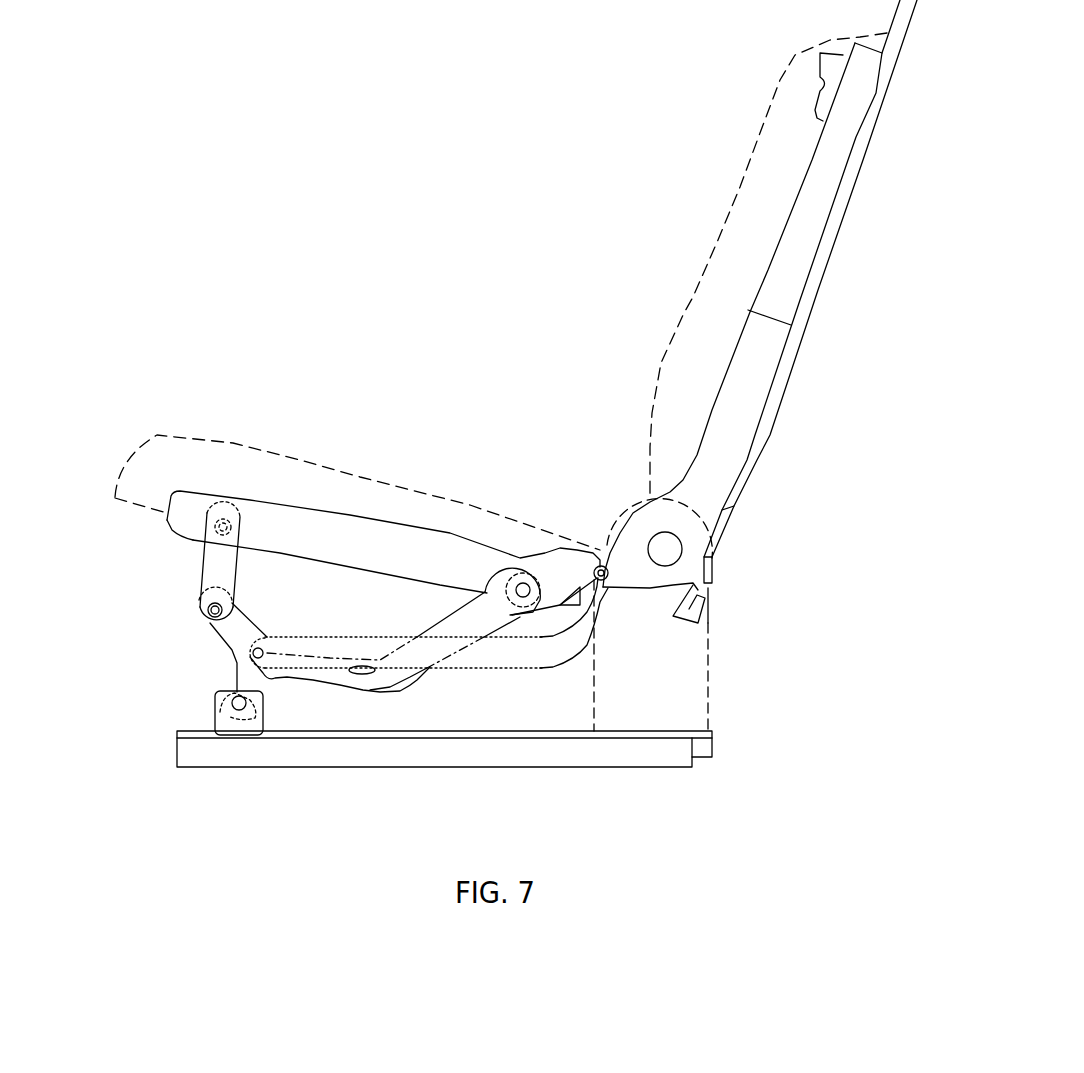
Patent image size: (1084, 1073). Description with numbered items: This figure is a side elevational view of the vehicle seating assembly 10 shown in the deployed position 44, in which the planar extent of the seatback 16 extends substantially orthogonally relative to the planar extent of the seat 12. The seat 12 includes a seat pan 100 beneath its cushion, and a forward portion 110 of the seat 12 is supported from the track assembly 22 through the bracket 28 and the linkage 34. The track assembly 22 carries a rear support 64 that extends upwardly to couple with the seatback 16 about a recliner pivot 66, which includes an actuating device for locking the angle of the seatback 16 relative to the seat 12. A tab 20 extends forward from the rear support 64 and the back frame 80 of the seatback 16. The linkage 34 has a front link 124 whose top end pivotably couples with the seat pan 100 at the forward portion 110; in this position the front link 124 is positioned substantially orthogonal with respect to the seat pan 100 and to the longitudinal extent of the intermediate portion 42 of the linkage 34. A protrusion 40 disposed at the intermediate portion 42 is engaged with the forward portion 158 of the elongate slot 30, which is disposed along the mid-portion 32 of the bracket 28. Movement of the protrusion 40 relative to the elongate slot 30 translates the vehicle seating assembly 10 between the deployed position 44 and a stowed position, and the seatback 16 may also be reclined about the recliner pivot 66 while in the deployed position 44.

The vehicle seating assembly 10 is at (300, 68).
The deployed position 44 is at (254, 345).
The seatback 16 is at (775, 195).
The forward portion 110 is at (170, 470).
The seat 12 is at (276, 486).
The seat pan 100 is at (368, 530).
The tab 20 is at (603, 553).
The back frame 80 is at (722, 448).
The recliner pivot 66 is at (665, 548).
The rear support 64 is at (682, 668).
The front link 124 is at (200, 558).
The forward portion of the elongated slot 158 is at (280, 658).
The intermediate portion 42 is at (365, 648).
The protrusion 40 is at (250, 655).
The track assembly 22 is at (158, 738).
The mid-portion 32 is at (310, 678).
The elongate slot 30 is at (350, 675).
The bracket 28 is at (467, 622).
The linkage 34 is at (548, 665).